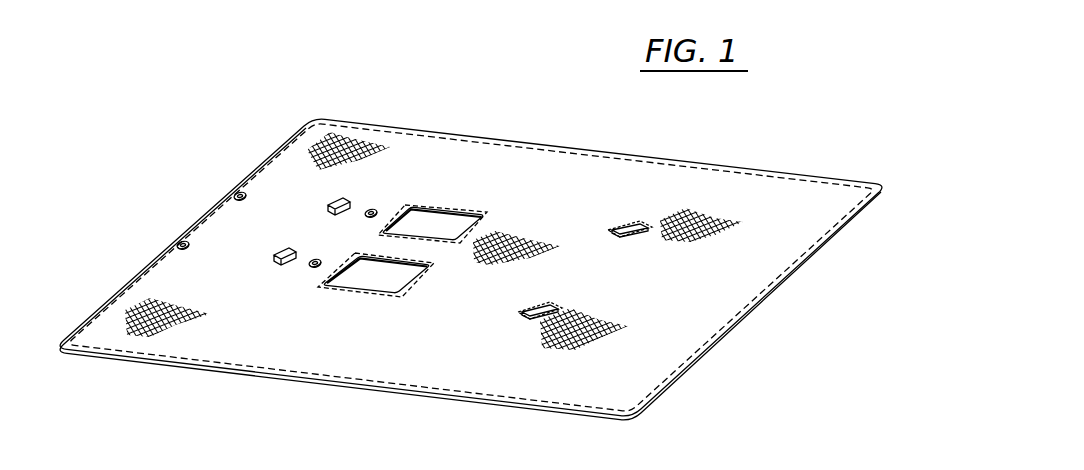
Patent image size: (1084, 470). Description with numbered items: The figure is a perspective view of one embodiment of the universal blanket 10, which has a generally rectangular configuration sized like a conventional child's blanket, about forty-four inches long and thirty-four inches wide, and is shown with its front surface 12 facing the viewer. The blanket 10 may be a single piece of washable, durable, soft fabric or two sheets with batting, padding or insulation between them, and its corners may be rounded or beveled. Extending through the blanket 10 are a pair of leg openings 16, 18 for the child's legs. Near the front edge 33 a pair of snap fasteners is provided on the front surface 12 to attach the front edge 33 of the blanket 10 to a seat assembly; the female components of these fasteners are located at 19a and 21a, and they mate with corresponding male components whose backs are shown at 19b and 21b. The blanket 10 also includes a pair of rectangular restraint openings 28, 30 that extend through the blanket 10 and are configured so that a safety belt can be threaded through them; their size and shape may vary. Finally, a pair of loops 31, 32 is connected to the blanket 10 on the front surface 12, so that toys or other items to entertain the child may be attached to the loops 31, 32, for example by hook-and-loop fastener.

The universal blanket 10 is at (244, 102).
The front surface 12 is at (583, 168).
The leg opening 16 is at (378, 292).
The leg opening 18 is at (455, 215).
The female component of snap fastener 19a is at (178, 243).
The back of male component of snap fastener 19b is at (313, 268).
The female component of snap fastener 21a is at (235, 194).
The back of male component of snap fastener 21b is at (372, 209).
The restraint opening 28 is at (535, 310).
The restraint opening 30 is at (627, 228).
The loop 31 is at (274, 258).
The loop 32 is at (328, 206).
The front edge 33 is at (92, 310).